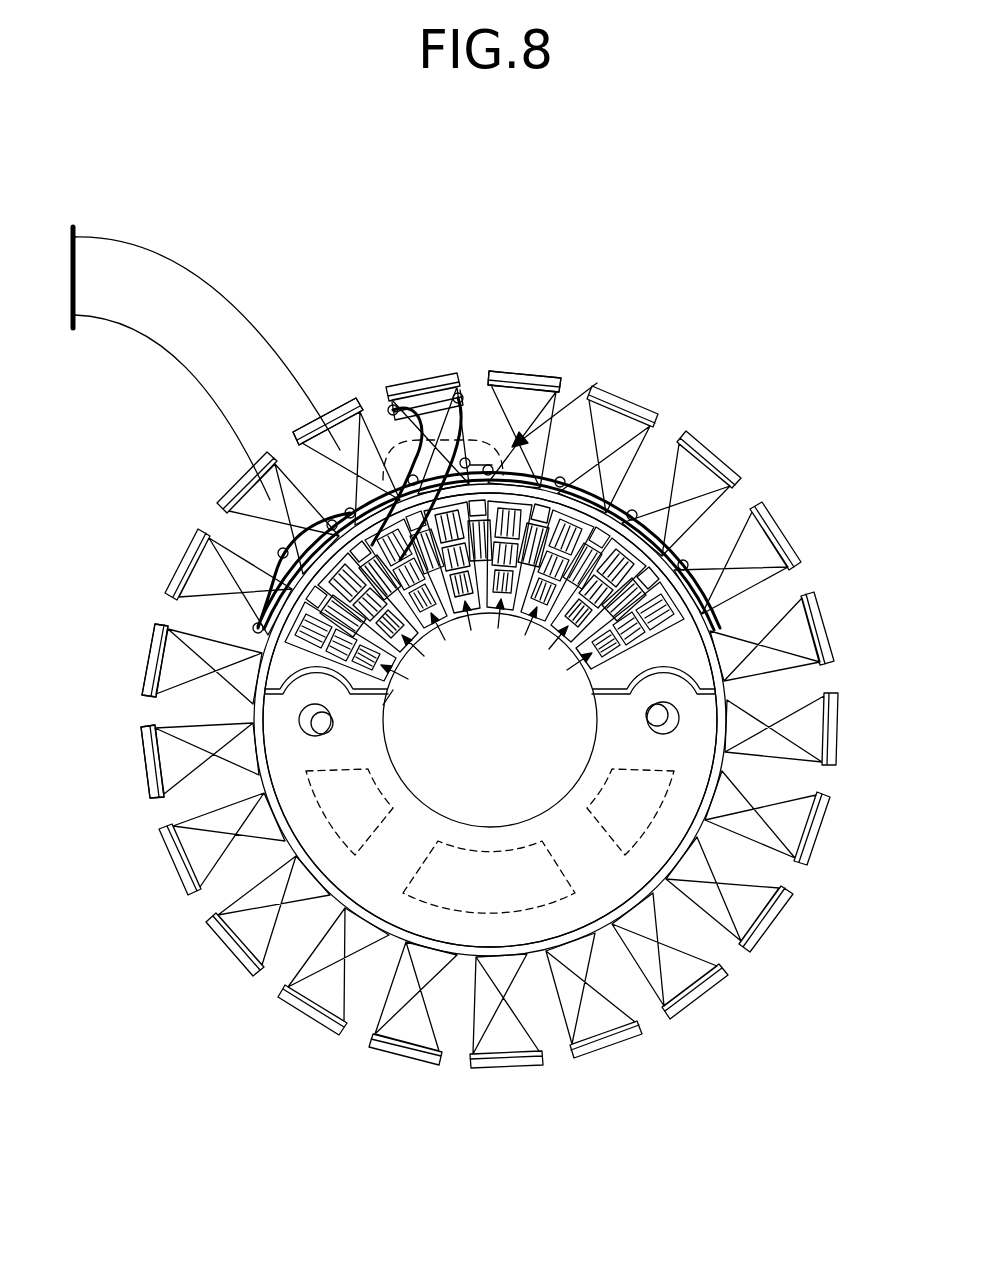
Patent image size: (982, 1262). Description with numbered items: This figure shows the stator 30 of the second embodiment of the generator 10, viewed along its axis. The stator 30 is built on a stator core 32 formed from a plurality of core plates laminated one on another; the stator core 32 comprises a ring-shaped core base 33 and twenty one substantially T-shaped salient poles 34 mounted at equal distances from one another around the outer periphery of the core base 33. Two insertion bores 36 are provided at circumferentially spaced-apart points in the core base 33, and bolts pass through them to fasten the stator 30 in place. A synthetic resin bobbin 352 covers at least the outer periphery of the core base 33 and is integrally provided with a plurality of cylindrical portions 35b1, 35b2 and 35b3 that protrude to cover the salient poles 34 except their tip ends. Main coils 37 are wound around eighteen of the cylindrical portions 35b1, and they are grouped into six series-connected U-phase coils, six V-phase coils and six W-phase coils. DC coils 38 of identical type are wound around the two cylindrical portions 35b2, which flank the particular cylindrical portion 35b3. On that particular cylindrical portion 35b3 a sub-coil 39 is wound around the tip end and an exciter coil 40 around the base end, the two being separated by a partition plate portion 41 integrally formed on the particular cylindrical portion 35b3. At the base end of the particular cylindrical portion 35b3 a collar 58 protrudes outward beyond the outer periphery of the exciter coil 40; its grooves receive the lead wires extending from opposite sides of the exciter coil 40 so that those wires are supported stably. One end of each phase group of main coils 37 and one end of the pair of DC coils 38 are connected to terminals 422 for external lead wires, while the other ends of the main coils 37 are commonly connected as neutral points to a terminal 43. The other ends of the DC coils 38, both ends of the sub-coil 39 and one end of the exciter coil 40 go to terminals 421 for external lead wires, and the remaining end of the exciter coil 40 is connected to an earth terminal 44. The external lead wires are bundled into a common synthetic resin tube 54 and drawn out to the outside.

The generator 10 is at (591, 395).
The stator 30 is at (212, 935).
The stator core 32 is at (589, 739).
The core base 33 is at (748, 748).
The salient poles 34 is at (733, 995).
The bobbin 352 is at (675, 828).
The cylindrical portions 35b1 is at (143, 763).
The cylindrical portions 35b2 is at (528, 388).
The particular cylindrical portion 35b3 is at (448, 440).
The insertion bores 36 is at (660, 728).
The main coils 37 is at (800, 610).
The DC coils 38 is at (330, 462).
The sub-coil 39 is at (440, 385).
The exciter coil 40 is at (468, 458).
The partition plate portion 41 is at (392, 402).
The terminals for external lead wires 421 is at (477, 580).
The terminals for external lead wires 422 is at (540, 640).
The terminal 43 is at (393, 680).
The earth terminal 44 is at (498, 580).
The tube 54 is at (227, 322).
The collar 58 is at (492, 465).